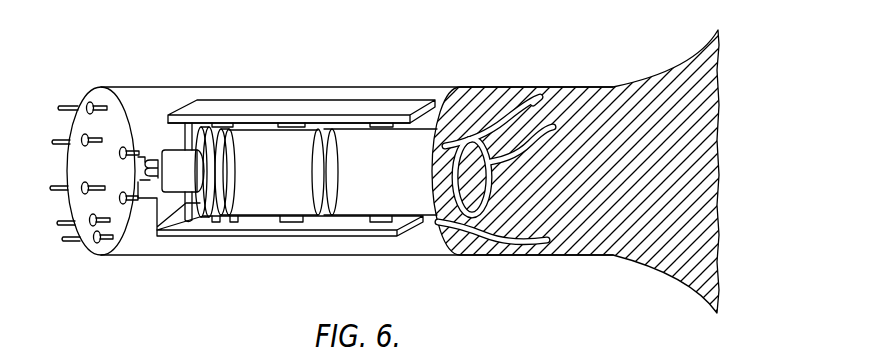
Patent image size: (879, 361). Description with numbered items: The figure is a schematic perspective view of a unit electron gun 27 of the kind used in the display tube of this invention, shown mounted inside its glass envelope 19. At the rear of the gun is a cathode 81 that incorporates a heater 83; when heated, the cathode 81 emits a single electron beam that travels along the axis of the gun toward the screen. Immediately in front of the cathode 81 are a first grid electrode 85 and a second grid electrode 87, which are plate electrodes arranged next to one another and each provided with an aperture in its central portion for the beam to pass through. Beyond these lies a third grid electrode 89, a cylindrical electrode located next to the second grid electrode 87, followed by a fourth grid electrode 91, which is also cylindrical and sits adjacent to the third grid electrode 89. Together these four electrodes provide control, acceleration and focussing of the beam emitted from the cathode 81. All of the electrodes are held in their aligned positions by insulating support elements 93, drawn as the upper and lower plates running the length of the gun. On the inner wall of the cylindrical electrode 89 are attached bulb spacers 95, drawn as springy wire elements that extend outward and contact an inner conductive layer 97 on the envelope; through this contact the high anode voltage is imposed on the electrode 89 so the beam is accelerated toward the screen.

The tube envelope 19 is at (154, 86).
The electron gun 27 is at (283, 80).
The insulating support elements 93 is at (237, 100).
The heater 83 is at (148, 185).
The cathode 81 is at (177, 198).
The 1st grid electrode (G1) 85 is at (203, 218).
The 2nd grid electrode (G2) 87 is at (233, 216).
The 3rd grid electrode (G3) 89 is at (268, 200).
The 4th grid electrode (G4) 91 is at (360, 198).
The bulb spacers 95 is at (536, 100).
The inner conductive layer 97 is at (620, 213).